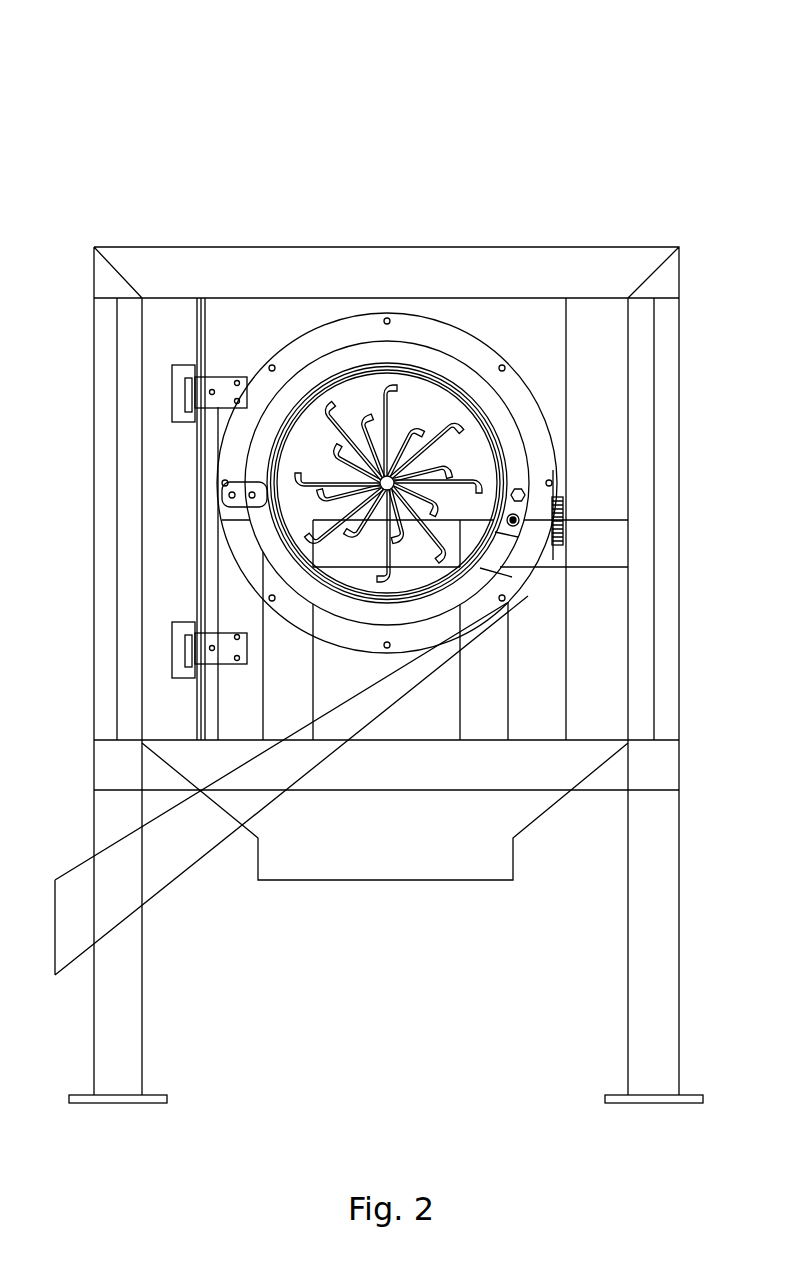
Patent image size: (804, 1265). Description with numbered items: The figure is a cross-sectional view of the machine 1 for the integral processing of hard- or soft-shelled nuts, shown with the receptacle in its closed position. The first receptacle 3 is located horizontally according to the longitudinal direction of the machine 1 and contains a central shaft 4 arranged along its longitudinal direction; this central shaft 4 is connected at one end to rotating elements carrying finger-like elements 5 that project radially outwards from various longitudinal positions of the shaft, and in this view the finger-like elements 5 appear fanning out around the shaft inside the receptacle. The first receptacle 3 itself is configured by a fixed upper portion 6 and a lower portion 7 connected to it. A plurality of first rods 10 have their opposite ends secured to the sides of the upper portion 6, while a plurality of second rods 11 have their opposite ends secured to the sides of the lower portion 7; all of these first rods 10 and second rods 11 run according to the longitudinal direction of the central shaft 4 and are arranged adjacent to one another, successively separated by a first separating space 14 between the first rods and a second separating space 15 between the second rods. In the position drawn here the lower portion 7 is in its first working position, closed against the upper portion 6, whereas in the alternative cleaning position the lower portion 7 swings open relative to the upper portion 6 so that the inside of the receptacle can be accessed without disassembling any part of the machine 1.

The machine 1 is at (593, 123).
The first receptacle 3 is at (310, 348).
The central shaft 4 is at (330, 524).
The finger-like elements 5 is at (443, 422).
The fixed upper portion 6 is at (503, 447).
The lower portion 7 is at (450, 617).
The first rods 10 is at (262, 470).
The second rods 11 is at (500, 572).
The first separating space 14 is at (313, 385).
The second separating space 15 is at (398, 572).